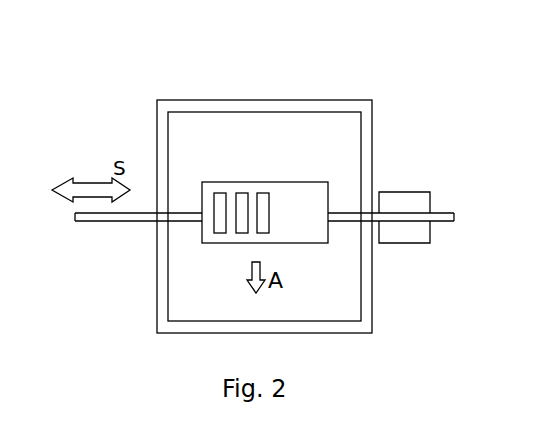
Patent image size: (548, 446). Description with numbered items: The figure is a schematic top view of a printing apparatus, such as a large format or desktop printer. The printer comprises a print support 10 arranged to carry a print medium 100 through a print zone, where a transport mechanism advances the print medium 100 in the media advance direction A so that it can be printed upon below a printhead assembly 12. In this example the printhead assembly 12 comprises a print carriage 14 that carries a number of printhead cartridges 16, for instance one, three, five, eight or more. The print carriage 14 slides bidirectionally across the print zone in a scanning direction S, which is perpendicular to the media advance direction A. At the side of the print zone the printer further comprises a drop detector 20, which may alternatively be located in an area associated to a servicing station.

The print support 10 is at (366, 302).
The print medium 100 is at (345, 275).
The printhead assembly 12 is at (331, 185).
The print carriage 14 is at (297, 190).
The printhead cartridges 16 is at (243, 197).
The drop detector 20 is at (420, 198).